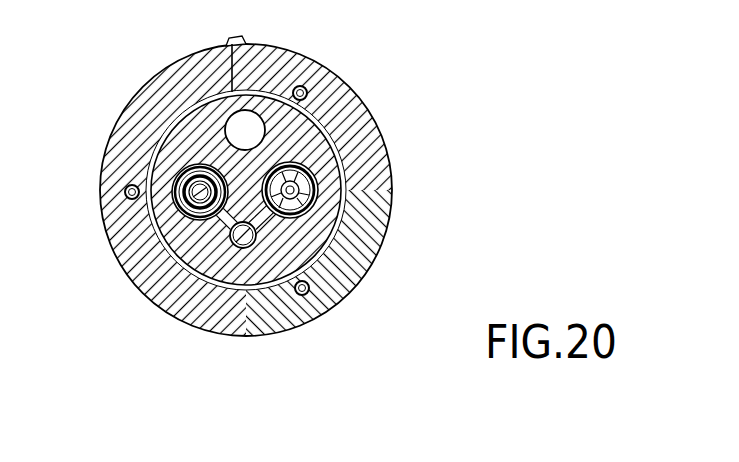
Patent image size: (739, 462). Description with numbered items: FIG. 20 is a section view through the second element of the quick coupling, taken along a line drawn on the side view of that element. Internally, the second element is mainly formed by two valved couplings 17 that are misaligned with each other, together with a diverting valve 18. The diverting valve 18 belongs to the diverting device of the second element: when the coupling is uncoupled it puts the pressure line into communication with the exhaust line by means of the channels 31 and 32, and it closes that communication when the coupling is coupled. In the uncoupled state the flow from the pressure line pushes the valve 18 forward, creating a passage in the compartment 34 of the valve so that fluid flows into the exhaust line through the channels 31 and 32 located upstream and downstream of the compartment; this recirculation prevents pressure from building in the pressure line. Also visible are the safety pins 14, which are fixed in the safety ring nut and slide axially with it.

The safety pin 14 is at (126, 188).
The valved coupling 17 is at (392, 208).
The diverting valve 18 is at (156, 305).
The channel 31 is at (188, 165).
The channel 32 is at (305, 170).
The compartment 34 is at (250, 246).